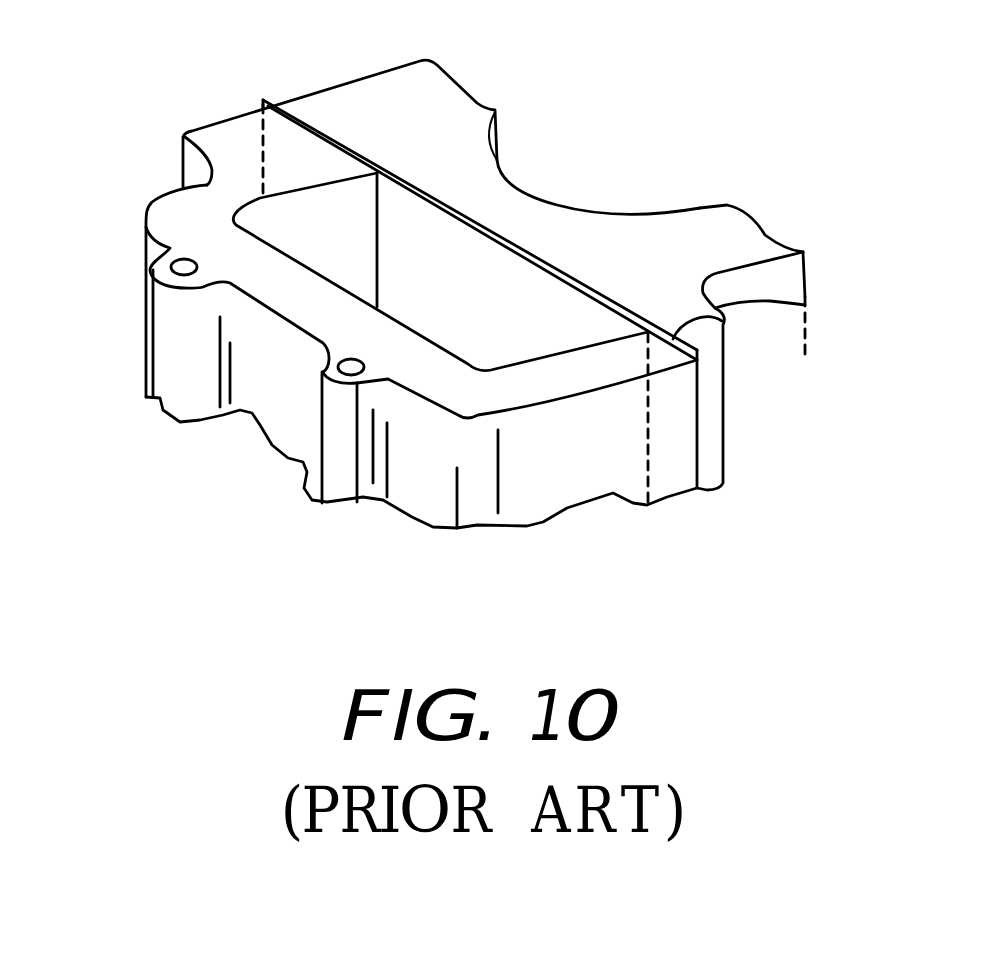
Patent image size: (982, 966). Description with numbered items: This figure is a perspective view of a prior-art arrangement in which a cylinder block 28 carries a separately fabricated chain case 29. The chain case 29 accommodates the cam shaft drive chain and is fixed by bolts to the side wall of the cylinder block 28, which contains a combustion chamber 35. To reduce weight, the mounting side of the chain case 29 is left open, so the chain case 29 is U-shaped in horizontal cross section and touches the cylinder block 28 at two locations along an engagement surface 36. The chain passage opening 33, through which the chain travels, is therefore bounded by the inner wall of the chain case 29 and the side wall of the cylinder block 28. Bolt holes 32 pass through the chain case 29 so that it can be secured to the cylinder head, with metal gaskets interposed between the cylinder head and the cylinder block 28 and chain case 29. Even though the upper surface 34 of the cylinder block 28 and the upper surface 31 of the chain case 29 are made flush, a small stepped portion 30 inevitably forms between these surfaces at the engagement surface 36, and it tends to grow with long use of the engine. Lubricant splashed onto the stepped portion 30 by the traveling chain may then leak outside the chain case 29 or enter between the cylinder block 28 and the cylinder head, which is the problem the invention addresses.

The cylinder block 28 is at (705, 379).
The chain case 29 is at (291, 372).
The stepped portion 30 is at (293, 118).
The upper surface of the chain case 31 is at (517, 397).
The bolt holes 32 is at (178, 267).
The chain passage opening 33 is at (310, 222).
The upper surface of the cylinder block 34 is at (627, 252).
The combustion chamber 35 is at (557, 203).
The engagement surface 36 is at (342, 208).